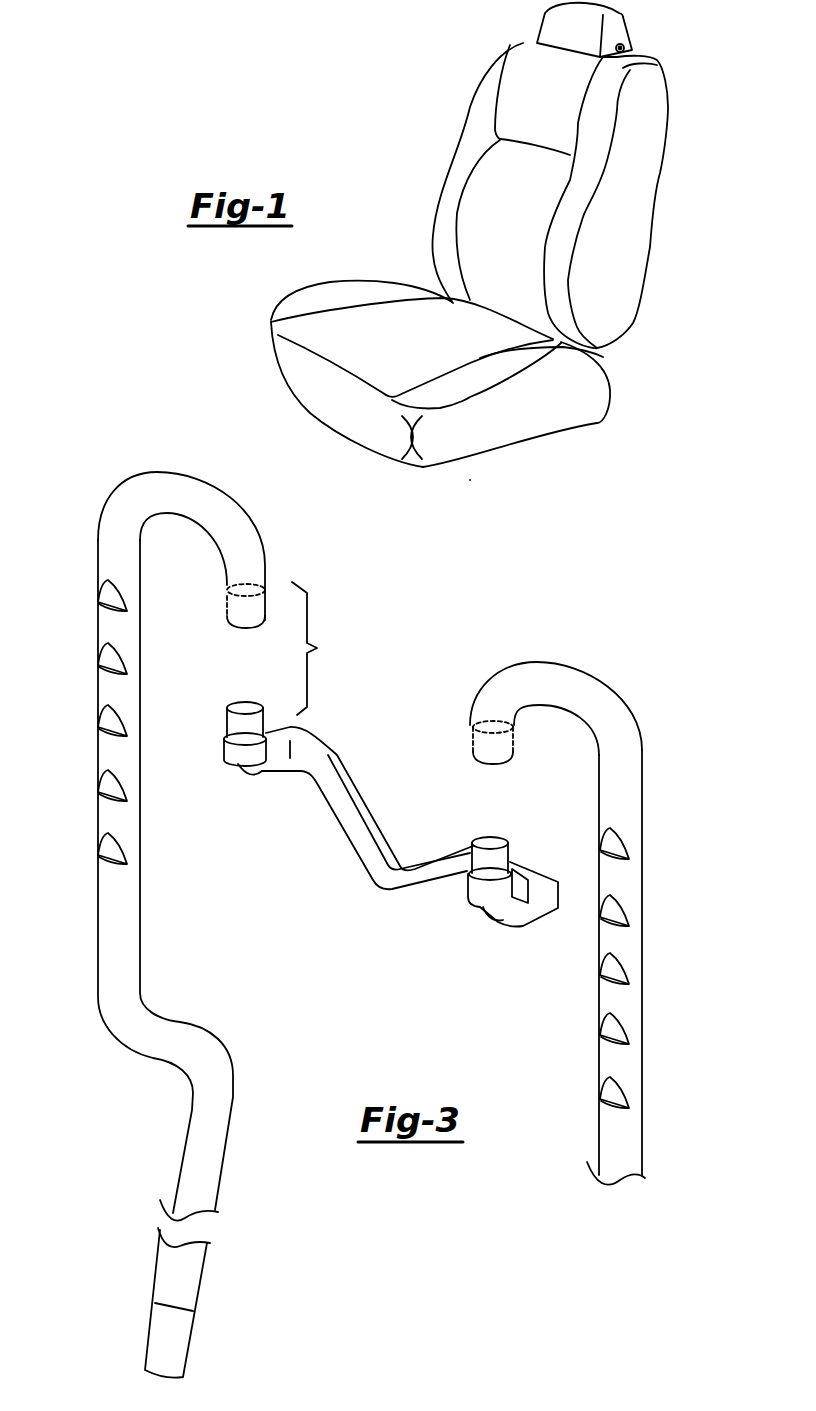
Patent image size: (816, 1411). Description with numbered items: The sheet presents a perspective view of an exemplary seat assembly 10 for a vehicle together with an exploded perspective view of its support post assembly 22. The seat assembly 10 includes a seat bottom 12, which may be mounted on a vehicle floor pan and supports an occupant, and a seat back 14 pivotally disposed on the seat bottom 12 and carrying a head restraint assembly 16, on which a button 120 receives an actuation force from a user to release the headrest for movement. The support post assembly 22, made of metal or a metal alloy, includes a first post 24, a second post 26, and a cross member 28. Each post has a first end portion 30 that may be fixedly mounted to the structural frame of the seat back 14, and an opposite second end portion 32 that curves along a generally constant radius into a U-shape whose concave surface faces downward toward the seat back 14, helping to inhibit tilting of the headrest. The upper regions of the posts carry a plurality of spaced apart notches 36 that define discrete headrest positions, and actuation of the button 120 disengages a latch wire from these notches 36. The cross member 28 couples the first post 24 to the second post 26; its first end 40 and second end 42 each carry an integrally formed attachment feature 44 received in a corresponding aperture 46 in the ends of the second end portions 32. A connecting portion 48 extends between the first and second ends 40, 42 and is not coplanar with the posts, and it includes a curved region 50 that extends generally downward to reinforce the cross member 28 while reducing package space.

In FIG. 1, the seat assembly 10 is at (444, 82).
In FIG. 1, the seat bottom 12 is at (293, 372).
In FIG. 1, the seat back 14 is at (468, 137).
In FIG. 1, the head restraint assembly 16 is at (547, 22).
In FIG. 1, the button 120 is at (640, 42).
In FIG. 3, the support post assembly 22 is at (498, 592).
In FIG. 3, the first post 24 is at (195, 1135).
In FIG. 3, the second post 26 is at (627, 1148).
In FIG. 3, the cross member 28 is at (318, 848).
In FIG. 3, the first end portion 30 is at (190, 1277).
In FIG. 3, the second end portion 32 is at (170, 490).
In FIG. 3, the notches 36 is at (100, 660).
In FIG. 3, the first end 40 is at (258, 693).
In FIG. 3, the second end 42 is at (466, 830).
In FIG. 3, the attachment feature 44 is at (247, 710).
In FIG. 3, the aperture 46 is at (233, 613).
In FIG. 3, the connecting portion 48 is at (322, 743).
In FIG. 3, the curved region 50 is at (382, 887).